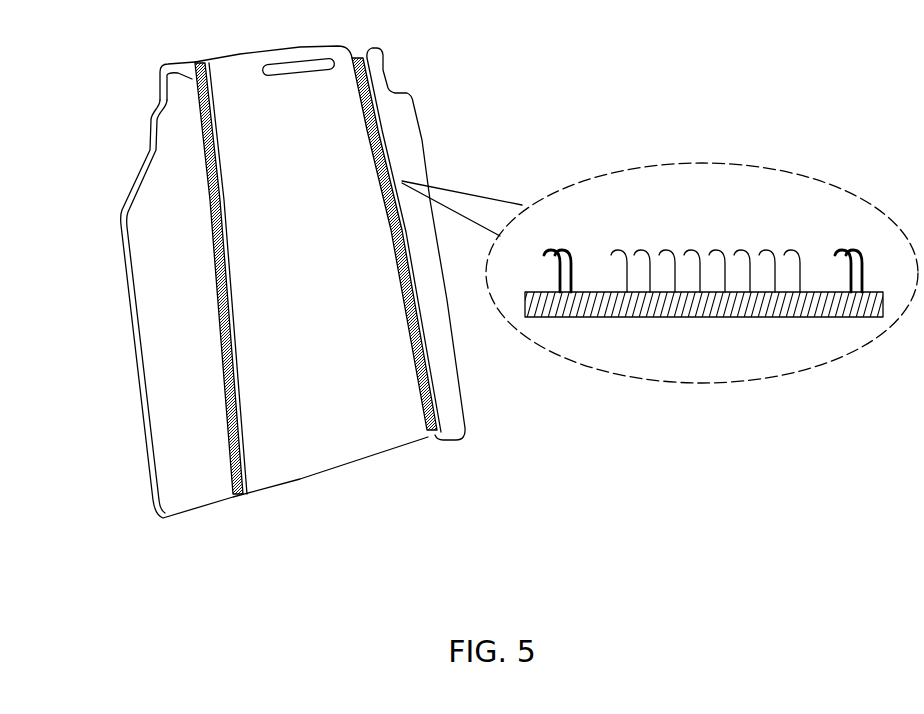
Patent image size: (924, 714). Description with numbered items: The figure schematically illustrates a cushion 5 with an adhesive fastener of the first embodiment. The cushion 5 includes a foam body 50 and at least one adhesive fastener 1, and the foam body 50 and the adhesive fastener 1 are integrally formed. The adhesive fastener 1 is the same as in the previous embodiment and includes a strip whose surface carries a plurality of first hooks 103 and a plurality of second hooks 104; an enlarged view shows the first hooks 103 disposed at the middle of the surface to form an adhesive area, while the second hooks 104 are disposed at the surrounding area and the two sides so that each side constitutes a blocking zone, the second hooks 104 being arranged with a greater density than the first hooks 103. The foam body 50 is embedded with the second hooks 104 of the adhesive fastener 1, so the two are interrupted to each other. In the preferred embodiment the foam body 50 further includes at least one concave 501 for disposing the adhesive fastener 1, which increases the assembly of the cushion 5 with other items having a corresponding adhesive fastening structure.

The cushion 5 is at (186, 44).
The foam body 50 is at (172, 443).
The concave 501 is at (175, 80).
The adhesive fastener 1 is at (377, 100).
The first hooks 103 is at (681, 249).
The second hooks 104 is at (861, 252).